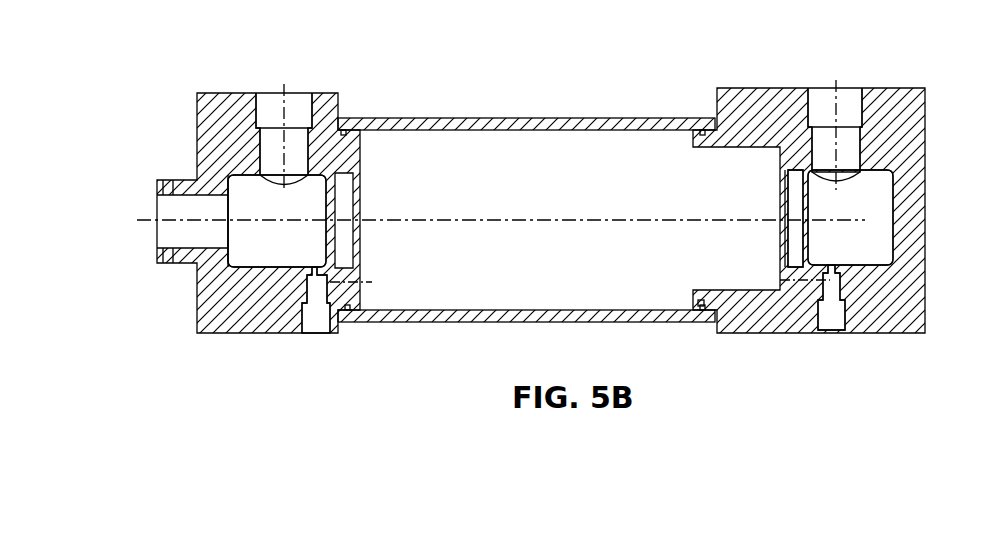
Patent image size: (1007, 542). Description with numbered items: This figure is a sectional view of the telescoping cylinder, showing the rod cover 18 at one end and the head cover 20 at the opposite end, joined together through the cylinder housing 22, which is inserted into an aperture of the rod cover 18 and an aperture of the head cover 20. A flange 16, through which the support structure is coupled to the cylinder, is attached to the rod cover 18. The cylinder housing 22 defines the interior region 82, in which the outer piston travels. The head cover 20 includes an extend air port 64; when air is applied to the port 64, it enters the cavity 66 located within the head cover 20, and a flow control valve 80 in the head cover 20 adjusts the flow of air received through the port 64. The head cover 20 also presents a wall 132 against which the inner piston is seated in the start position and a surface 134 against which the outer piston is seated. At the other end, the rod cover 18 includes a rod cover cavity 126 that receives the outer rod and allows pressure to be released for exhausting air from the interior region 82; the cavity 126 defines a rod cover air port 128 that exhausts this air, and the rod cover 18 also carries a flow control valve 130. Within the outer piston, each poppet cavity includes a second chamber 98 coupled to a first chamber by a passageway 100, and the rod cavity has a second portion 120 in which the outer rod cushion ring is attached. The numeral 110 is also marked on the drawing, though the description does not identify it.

The flange 16 is at (305, 6).
The rod cover 18 is at (213, 100).
The head cover 20 is at (893, 98).
The cylinder housing 22 is at (388, 124).
The extend air port 64 is at (838, 110).
The cavity 66 is at (867, 198).
The flow control valve 80 is at (838, 316).
The interior region 82 is at (427, 290).
The second chamber 98 is at (242, 13).
The passageway 100 is at (208, 0).
The fitting 110 is at (53, 9).
The second portion 120 is at (190, 162).
The rod cover cavity 126 is at (268, 250).
The rod cover air port 128 is at (288, 100).
The flow control valve 130 is at (318, 318).
The wall 132 is at (789, 151).
The surface 134 is at (707, 306).